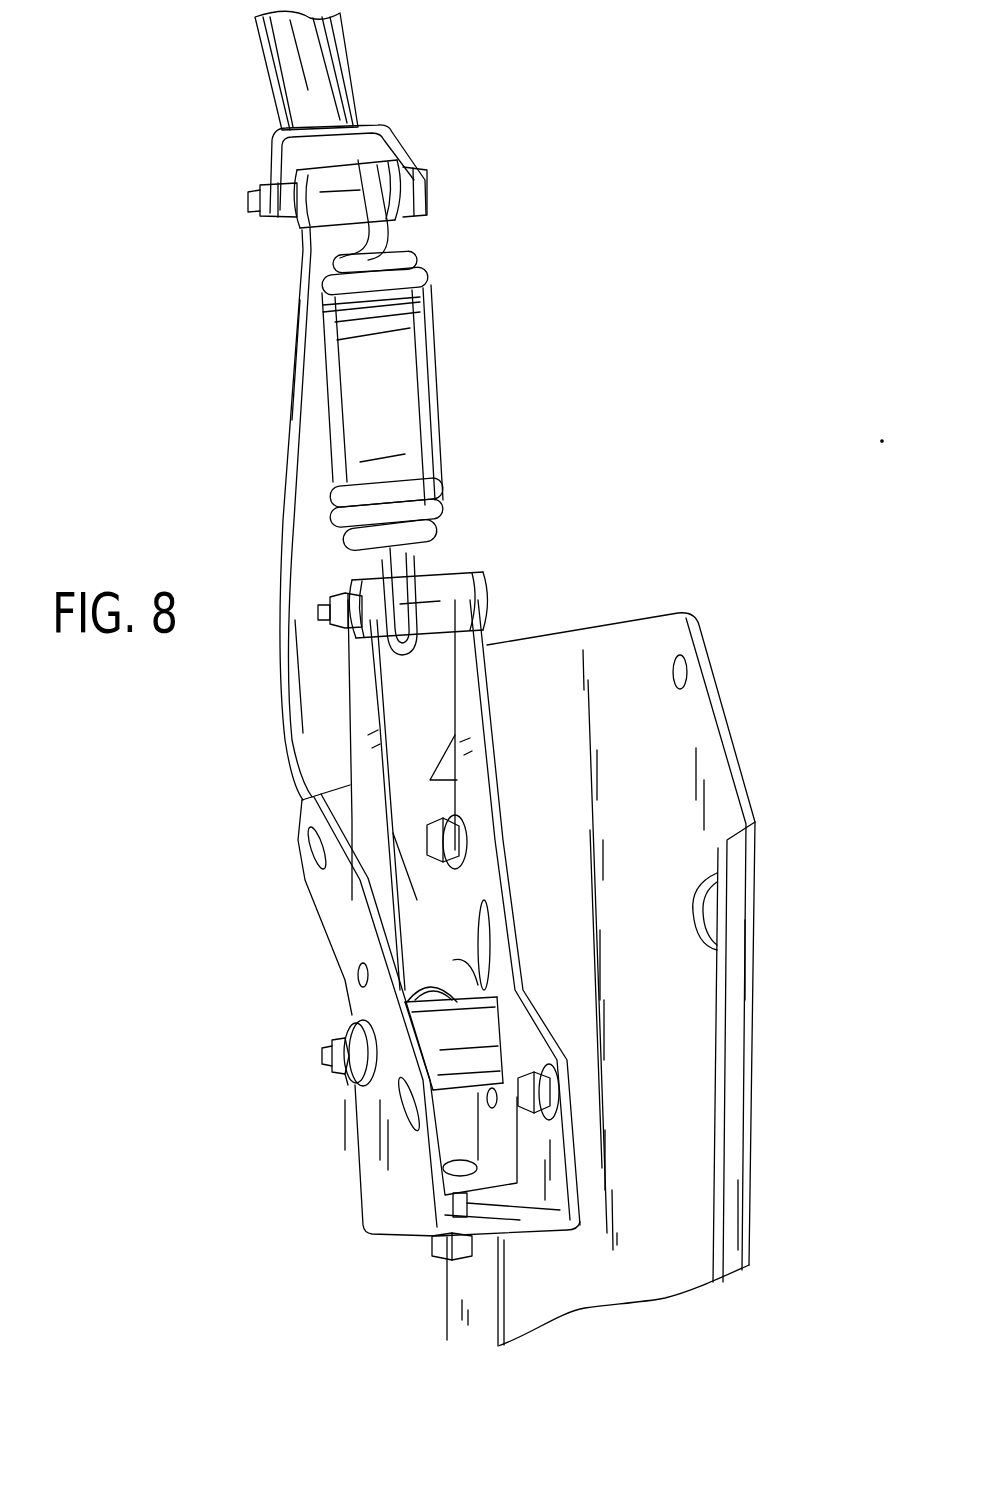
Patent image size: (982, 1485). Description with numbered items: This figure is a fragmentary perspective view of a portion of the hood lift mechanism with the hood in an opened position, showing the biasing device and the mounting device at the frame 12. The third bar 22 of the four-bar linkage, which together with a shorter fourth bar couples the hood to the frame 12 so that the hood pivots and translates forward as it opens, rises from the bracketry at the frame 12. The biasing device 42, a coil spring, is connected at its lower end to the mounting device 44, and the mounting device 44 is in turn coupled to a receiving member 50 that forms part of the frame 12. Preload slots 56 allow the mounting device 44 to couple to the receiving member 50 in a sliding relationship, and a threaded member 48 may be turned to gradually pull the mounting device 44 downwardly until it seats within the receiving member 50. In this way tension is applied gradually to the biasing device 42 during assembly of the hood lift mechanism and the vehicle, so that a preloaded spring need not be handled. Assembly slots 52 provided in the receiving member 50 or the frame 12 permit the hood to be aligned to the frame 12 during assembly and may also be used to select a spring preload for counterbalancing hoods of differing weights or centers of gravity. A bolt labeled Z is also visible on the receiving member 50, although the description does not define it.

The frame 12 is at (750, 1105).
The third bar 22 is at (290, 407).
The biasing device 42 is at (438, 375).
The mounting device 44 is at (493, 693).
The threaded member 48 is at (533, 1225).
The receiving member 50 is at (362, 1160).
The assembly slots 52 is at (365, 1210).
The preload slots 56 is at (490, 937).
The bolt Z is at (330, 1052).